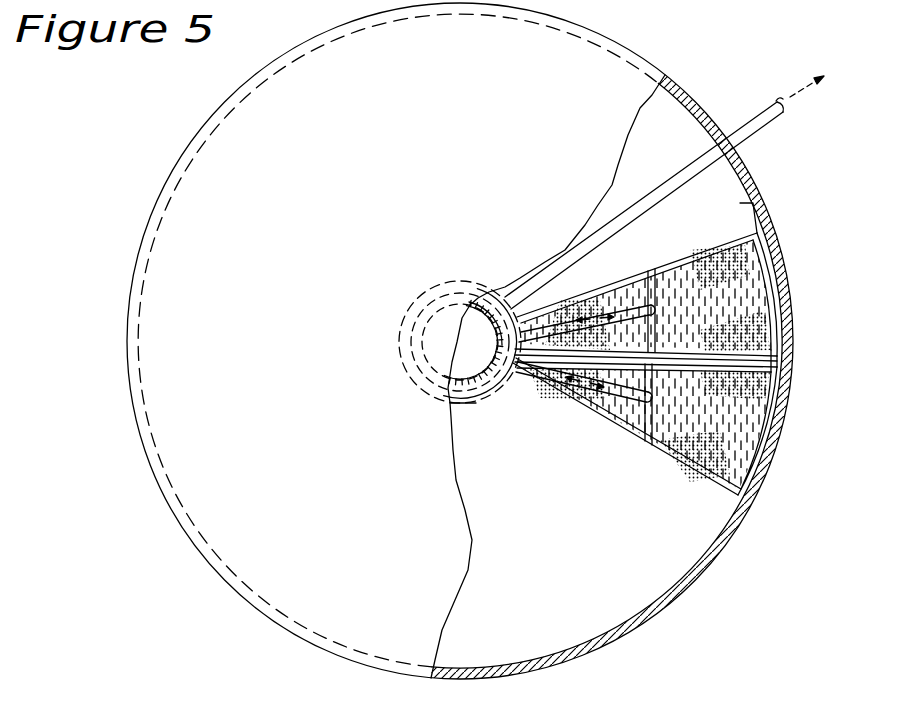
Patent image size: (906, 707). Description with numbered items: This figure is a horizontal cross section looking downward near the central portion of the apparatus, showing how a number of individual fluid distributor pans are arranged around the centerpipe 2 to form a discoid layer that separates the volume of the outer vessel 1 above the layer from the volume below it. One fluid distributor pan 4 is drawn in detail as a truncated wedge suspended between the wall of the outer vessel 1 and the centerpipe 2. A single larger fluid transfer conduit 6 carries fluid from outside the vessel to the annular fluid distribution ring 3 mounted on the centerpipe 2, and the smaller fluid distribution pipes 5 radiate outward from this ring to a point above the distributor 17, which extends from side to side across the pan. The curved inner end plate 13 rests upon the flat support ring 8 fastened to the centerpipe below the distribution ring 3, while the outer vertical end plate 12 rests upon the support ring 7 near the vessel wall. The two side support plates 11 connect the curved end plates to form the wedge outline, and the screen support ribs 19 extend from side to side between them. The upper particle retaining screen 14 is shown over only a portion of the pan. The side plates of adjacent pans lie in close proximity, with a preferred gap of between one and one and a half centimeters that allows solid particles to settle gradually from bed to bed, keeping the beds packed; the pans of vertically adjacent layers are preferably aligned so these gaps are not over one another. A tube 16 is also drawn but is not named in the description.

The outer vessel 1 is at (668, 74).
The centerpipe 2 is at (462, 383).
The annular fluid distribution ring 3 is at (433, 283).
The fluid distributor pan 4 is at (672, 349).
The fluid distribution pipe 5 is at (607, 388).
The fluid transfer conduit 6 is at (772, 126).
The support ring 7 is at (727, 510).
The flat support ring 8 is at (420, 367).
The side support plates 11 is at (553, 303).
The outer vertical end plate 12 is at (767, 273).
The curved inner end plate 13 is at (496, 333).
The upper particle retaining screen 14 is at (764, 340).
The lower distribution tube 16 is at (626, 409).
The distributor 17 is at (648, 287).
The screen support ribs 19 is at (710, 293).